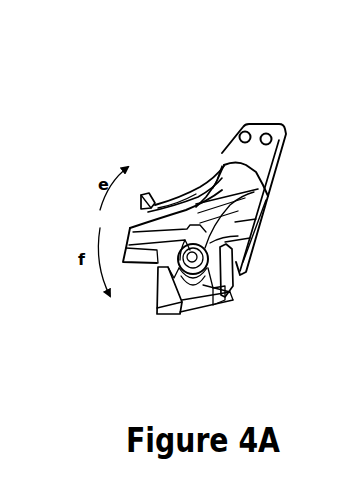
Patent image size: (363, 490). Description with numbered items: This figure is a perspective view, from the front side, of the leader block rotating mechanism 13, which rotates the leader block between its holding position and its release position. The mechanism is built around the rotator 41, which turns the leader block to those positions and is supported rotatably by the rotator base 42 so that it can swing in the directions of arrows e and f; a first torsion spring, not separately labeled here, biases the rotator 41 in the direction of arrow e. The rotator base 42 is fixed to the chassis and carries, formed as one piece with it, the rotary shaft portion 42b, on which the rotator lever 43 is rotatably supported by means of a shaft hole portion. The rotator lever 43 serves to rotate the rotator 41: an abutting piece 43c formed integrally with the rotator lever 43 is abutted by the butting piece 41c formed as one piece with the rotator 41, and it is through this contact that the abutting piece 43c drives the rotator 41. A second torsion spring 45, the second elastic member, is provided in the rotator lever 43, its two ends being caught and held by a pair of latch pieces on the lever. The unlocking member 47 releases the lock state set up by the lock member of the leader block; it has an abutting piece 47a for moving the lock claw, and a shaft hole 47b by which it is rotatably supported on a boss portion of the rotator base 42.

The leader block rotating mechanism 13 is at (318, 378).
The rotator 41 is at (250, 228).
The butting piece 41c is at (250, 242).
The rotator base 42 is at (266, 156).
The rotary shaft portion 42b is at (150, 273).
The rotator lever 43 is at (237, 285).
The abutting piece 43c is at (253, 201).
The second torsion spring 45 is at (205, 312).
The unlocking member 47 is at (162, 198).
The abutting piece 47a is at (143, 195).
The shaft hole 47b is at (207, 172).